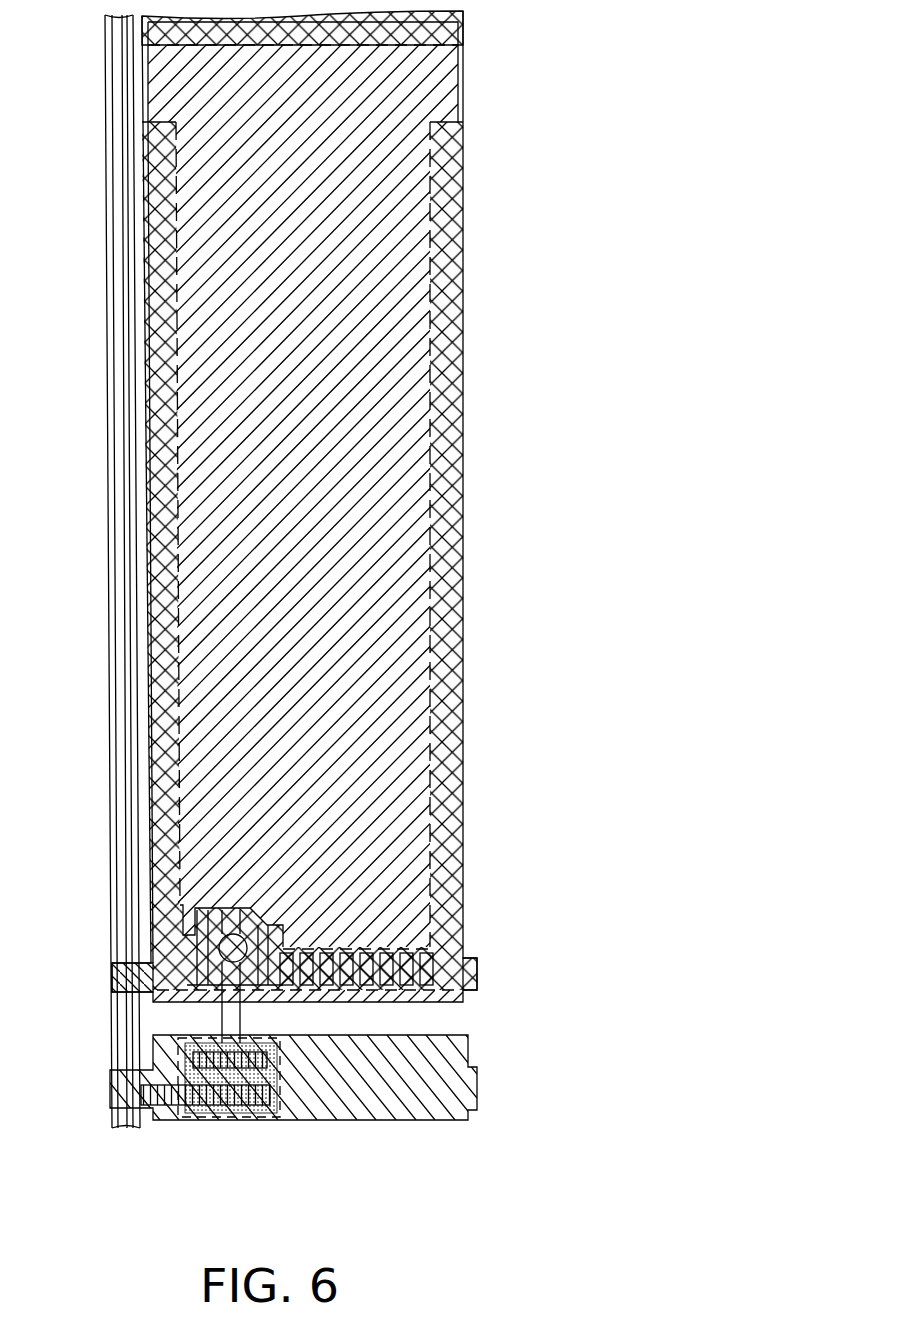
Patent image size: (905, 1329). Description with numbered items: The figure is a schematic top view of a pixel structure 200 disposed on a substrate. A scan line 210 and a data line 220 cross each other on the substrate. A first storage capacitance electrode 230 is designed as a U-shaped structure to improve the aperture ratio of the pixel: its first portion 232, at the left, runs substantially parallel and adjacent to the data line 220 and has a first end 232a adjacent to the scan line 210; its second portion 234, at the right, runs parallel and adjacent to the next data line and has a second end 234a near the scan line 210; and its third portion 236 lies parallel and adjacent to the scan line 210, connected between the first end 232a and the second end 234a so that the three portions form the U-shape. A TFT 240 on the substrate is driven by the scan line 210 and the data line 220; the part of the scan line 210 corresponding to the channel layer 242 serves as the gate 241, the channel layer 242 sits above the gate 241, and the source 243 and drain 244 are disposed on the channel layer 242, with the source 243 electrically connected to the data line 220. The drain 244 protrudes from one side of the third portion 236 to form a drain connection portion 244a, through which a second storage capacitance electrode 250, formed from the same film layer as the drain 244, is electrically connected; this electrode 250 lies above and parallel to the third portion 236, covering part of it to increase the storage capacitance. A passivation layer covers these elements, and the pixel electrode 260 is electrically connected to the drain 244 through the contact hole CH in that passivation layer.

The pixel structure 200 is at (567, 1200).
The scan line 210 is at (398, 1073).
The data line 220 is at (122, 789).
The first storage capacitance electrode 230 is at (338, 506).
The first portion 232 is at (178, 735).
The first end 232a is at (163, 900).
The second portion 234 is at (452, 675).
The second end 234a is at (467, 943).
The third portion 236 is at (355, 950).
The TFT 240 is at (213, 1138).
The gate 241 is at (259, 1119).
The channel layer 242 is at (258, 1116).
The source 243 is at (215, 1112).
The drain 244 is at (215, 1042).
The drain connection portion 244a is at (232, 1020).
The second storage capacitance electrode 250 is at (405, 1007).
The pixel electrode 260 is at (315, 592).
The contact hole CH is at (219, 950).